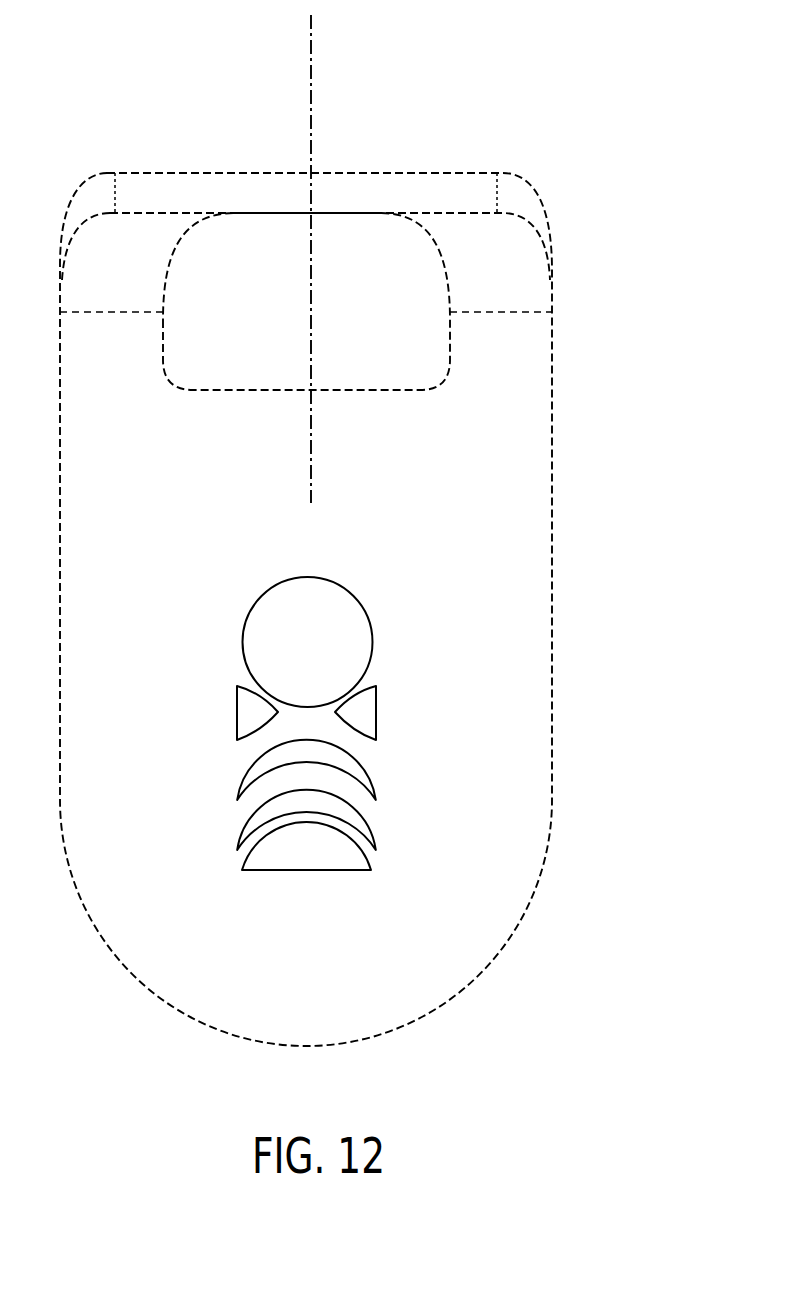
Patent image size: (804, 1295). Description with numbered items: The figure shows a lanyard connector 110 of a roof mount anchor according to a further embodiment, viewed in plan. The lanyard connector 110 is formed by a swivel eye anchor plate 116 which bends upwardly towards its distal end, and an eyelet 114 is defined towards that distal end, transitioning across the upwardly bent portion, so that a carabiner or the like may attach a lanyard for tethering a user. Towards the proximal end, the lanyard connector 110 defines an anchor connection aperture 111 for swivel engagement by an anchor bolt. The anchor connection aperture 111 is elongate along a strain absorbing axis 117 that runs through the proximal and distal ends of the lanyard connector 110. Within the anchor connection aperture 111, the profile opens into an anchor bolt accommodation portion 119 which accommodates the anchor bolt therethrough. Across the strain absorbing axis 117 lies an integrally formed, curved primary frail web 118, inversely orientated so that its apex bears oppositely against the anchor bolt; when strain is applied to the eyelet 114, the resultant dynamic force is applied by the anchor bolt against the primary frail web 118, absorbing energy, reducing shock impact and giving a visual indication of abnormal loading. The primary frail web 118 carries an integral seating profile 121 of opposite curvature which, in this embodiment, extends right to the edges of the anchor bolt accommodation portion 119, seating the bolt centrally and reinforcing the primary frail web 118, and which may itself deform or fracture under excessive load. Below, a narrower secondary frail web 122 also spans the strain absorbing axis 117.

The lanyard connector 110 is at (588, 108).
The anchor connection aperture 111 is at (257, 538).
The eyelet 114 is at (500, 288).
The swivel eye anchor plate 116 is at (552, 612).
The strain absorbing axis 117 is at (315, 90).
The primary frail web 118 is at (357, 735).
The anchor bolt accommodation portion 119 is at (352, 618).
The seating profile 121 is at (352, 686).
The secondary frail web 122 is at (357, 797).